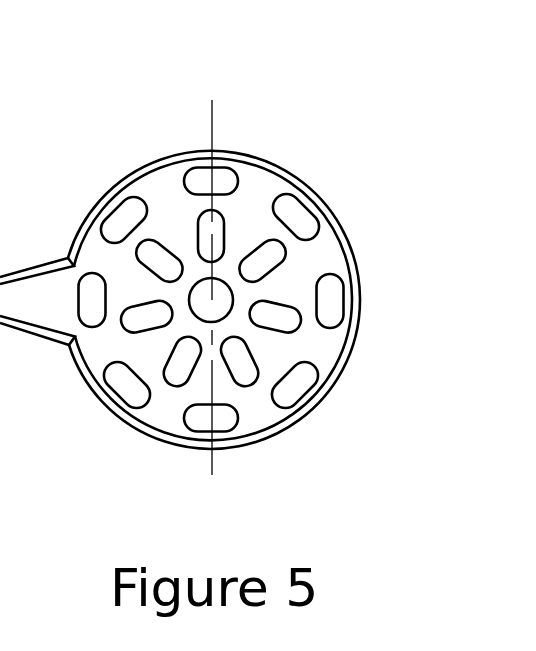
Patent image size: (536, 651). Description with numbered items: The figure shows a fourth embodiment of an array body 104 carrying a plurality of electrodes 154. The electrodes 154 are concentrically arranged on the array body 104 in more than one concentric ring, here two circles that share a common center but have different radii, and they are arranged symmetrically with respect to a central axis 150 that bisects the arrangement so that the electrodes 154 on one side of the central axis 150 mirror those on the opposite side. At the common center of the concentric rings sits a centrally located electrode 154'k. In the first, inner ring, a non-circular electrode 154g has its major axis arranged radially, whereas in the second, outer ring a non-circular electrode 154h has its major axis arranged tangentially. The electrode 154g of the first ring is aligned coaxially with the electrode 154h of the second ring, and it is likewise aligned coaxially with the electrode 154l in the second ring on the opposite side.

The array body 104 is at (318, 191).
The central axis 150 is at (212, 112).
The electrodes 154 is at (376, 301).
The non-circular electrode in a first concentric ring 154g is at (217, 233).
The non-circular electrode in a second concentric ring 154h is at (224, 184).
The electrode in a second concentric ring 154l is at (223, 417).
The centrally located electrode 154'k is at (314, 335).